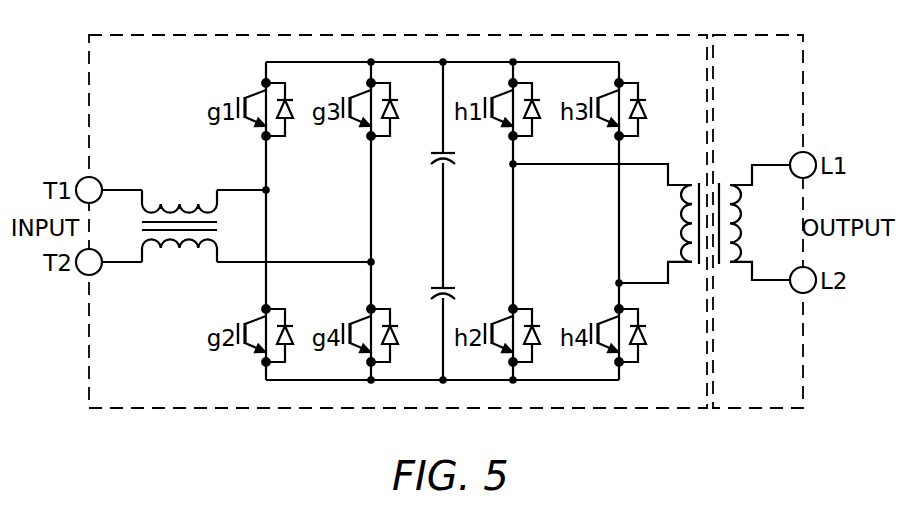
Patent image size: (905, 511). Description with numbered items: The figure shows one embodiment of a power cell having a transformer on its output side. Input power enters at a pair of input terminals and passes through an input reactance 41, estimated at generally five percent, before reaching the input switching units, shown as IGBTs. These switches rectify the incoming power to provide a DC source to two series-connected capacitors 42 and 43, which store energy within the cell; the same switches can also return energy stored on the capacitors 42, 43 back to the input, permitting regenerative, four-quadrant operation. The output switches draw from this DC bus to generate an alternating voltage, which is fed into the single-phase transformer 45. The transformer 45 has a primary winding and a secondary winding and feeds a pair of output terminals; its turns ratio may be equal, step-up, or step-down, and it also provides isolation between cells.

The input reactance 41 is at (178, 253).
The capacitor 42 is at (435, 153).
The capacitor 43 is at (433, 289).
The transformer 45 is at (688, 276).